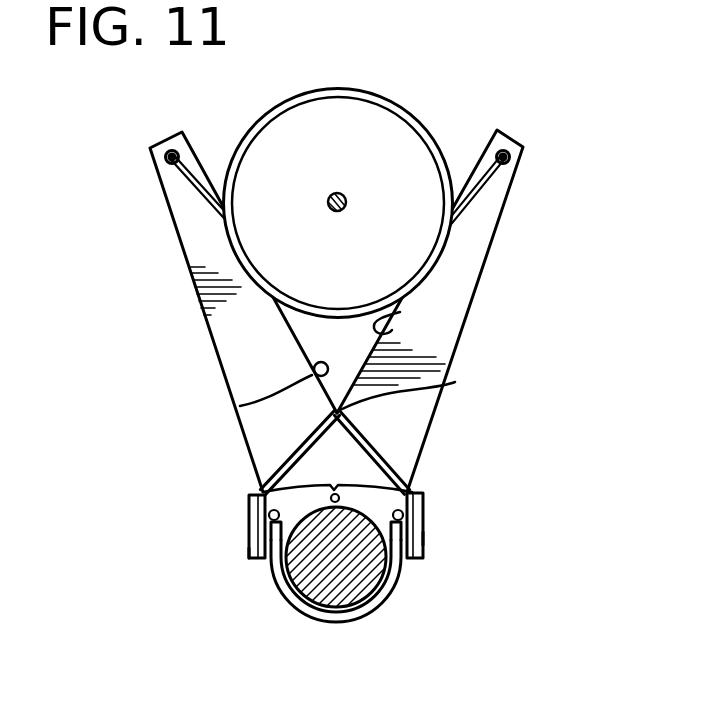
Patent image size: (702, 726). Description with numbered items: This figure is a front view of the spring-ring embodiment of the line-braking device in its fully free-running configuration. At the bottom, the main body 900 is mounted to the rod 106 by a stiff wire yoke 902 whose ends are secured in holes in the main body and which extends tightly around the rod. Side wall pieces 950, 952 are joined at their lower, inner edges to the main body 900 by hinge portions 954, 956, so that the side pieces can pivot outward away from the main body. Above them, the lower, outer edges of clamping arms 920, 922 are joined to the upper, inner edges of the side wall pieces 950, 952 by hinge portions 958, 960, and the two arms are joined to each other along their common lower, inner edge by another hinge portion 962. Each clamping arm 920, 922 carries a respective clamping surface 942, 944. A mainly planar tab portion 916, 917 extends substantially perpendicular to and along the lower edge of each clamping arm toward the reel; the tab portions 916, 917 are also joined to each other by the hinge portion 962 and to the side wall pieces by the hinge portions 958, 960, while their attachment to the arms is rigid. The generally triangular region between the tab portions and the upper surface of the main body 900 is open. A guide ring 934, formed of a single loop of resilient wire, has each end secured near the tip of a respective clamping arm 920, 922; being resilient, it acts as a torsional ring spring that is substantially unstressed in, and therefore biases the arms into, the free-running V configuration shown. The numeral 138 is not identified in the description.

The guide ring 934 is at (397, 103).
The hub 138 is at (342, 196).
The clamping surface 944 is at (400, 312).
The clamping arm 920 is at (257, 342).
The clamping arm 922 is at (403, 413).
The hinge portion 962 is at (455, 382).
The clamping surface 942 is at (240, 406).
The tab portion 916 is at (307, 444).
The tab portion 917 is at (377, 447).
The hinge portion 958 is at (260, 490).
The main body 900 is at (250, 502).
The hinge portion 960 is at (423, 494).
The side wall piece 950 is at (247, 548).
The side wall piece 952 is at (423, 532).
The hinge portion 954 is at (274, 566).
The hinge portion 956 is at (403, 562).
The yoke 902 is at (313, 618).
The rod 106 is at (348, 584).